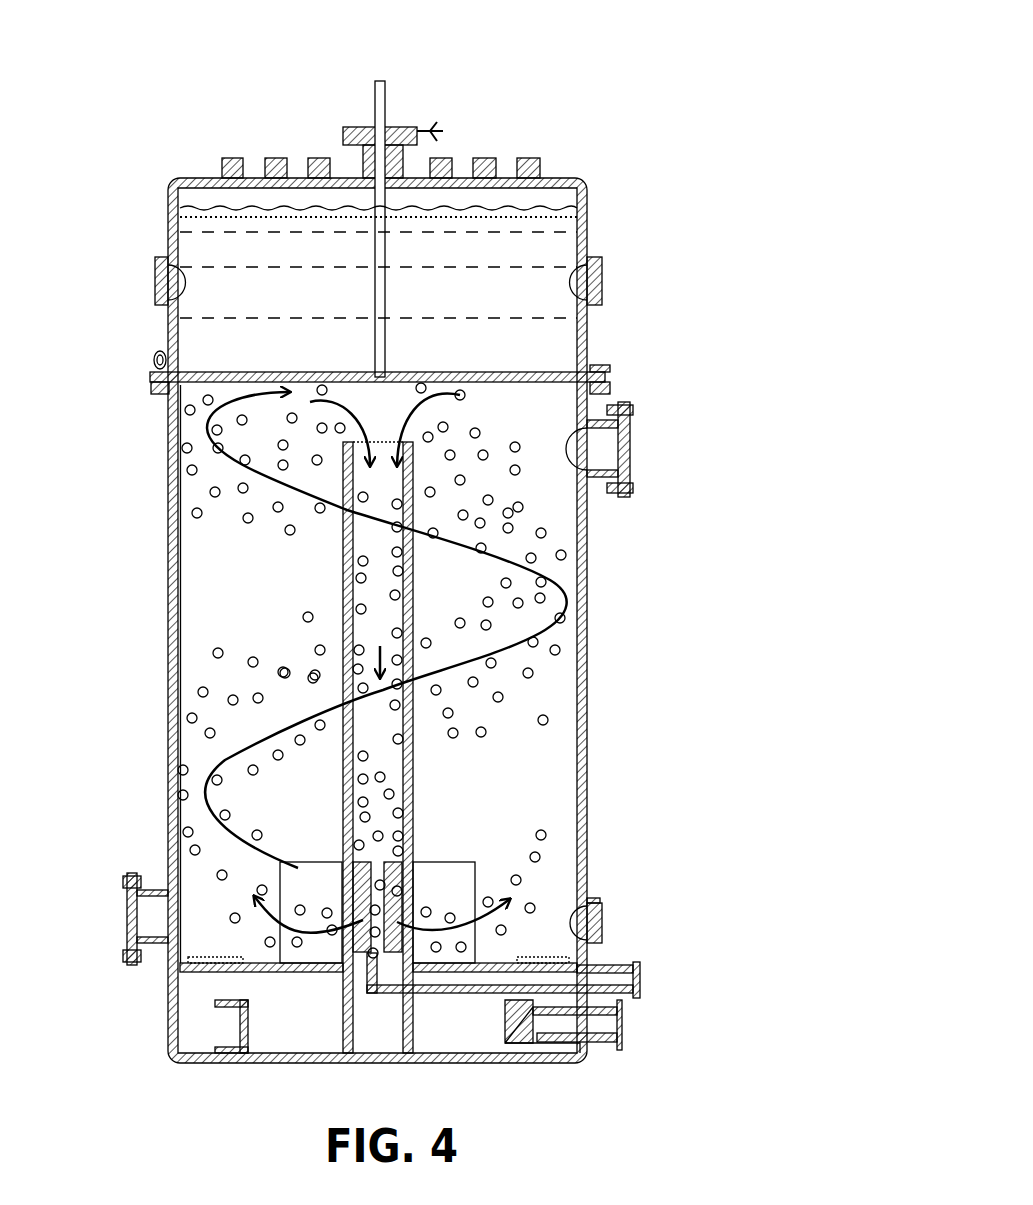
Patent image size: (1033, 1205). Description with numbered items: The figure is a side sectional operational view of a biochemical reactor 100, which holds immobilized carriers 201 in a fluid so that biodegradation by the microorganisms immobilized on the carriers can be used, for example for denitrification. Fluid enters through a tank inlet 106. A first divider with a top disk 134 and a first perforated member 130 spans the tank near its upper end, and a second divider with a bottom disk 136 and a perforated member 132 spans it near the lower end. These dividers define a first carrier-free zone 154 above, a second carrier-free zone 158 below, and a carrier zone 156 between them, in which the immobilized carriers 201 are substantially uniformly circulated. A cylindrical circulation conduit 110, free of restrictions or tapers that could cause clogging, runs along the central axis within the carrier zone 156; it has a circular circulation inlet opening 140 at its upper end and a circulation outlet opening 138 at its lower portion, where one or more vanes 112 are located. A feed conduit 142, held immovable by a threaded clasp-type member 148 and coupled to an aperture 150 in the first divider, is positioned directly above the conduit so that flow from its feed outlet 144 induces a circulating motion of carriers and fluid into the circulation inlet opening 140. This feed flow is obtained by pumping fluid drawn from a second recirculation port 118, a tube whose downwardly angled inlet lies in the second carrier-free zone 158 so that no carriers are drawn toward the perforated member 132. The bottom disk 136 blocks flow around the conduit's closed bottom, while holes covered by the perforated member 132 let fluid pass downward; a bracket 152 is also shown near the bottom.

The biochemical reactor 100 is at (589, 68).
The tank inlet 106 is at (638, 975).
The circulation conduit 110 is at (413, 807).
The vanes 112 is at (436, 862).
The second recirculation port 118 is at (621, 1015).
The first perforated member 130 is at (558, 362).
The perforated member 132 is at (537, 952).
The top disk 134 is at (440, 372).
The bottom disk 136 is at (498, 960).
The circulation outlet opening 138 is at (357, 938).
The circulation inlet opening 140 is at (365, 432).
The feed conduit 142 is at (386, 300).
The feed outlet 144 is at (382, 417).
The threaded clasp-type member 148 is at (432, 130).
The aperture 150 is at (385, 378).
The support bracket 152 is at (343, 1030).
The first carrier-free zone 154 is at (204, 247).
The carrier zone 156 is at (550, 496).
The second carrier-free zone 158 is at (197, 1023).
The immobilized carriers 201 is at (213, 652).